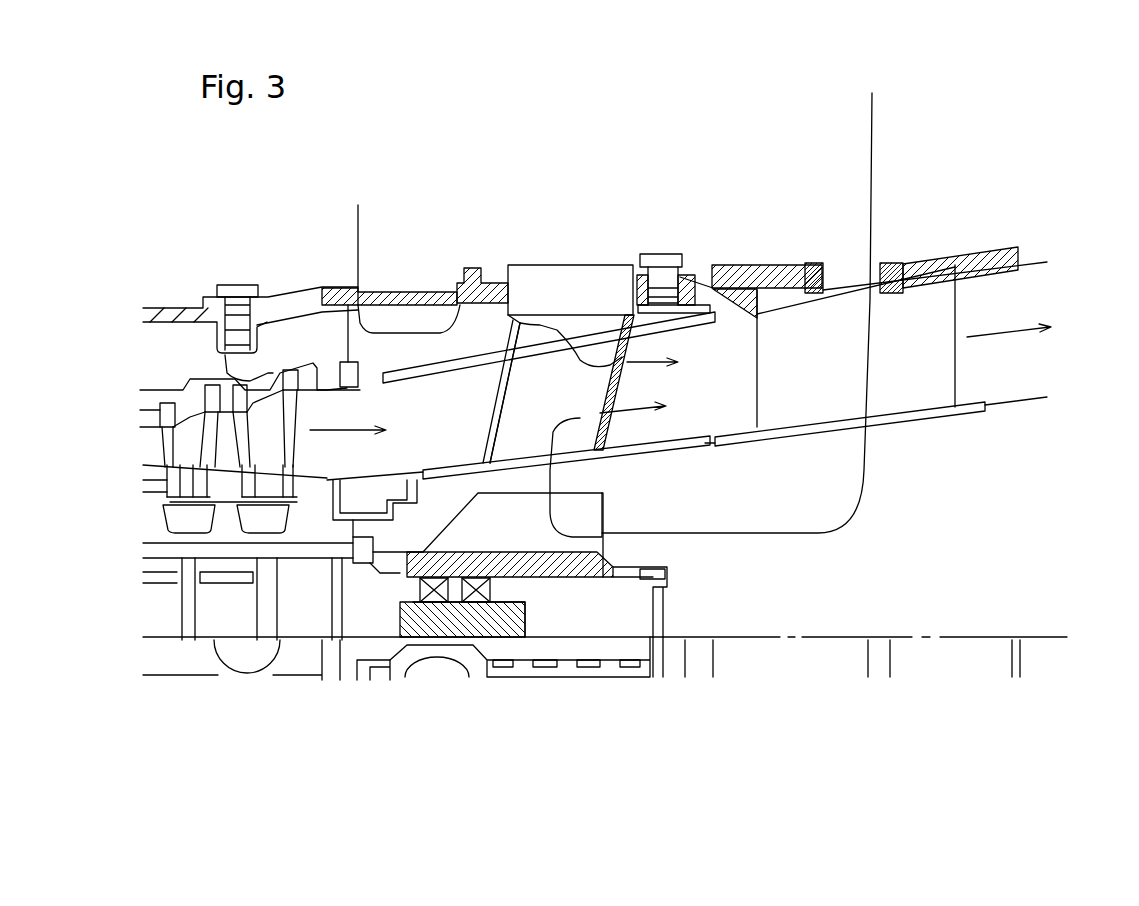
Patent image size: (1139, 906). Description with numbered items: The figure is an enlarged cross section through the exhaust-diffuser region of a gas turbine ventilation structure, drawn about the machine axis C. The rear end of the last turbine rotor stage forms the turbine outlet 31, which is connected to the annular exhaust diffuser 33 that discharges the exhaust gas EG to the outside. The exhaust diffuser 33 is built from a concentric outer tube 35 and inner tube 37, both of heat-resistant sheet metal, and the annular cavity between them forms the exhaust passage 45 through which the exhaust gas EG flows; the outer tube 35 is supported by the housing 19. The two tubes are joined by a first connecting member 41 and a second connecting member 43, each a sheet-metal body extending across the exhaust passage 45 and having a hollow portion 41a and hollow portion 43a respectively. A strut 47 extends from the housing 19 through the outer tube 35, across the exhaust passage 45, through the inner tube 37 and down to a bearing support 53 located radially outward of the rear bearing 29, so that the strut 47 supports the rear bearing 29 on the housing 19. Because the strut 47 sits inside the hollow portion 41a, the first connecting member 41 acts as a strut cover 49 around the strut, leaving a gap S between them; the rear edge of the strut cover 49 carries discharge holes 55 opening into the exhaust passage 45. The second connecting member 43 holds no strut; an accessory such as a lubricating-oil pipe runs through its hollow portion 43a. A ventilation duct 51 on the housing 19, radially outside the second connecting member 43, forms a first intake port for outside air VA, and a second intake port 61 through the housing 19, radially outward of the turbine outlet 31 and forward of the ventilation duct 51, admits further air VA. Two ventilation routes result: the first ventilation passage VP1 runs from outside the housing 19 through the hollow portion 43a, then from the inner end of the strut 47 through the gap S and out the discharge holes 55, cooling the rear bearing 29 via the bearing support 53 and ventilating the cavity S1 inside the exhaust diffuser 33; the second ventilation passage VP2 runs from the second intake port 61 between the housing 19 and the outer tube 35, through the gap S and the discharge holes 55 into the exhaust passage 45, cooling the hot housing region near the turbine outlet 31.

The housing 19 is at (283, 297).
The second intake port 61 is at (367, 287).
The ventilation duct 51 is at (818, 262).
The exhaust diffuser 33 is at (950, 222).
The outer tube 35 is at (920, 280).
The inner tube 37 is at (967, 320).
The first connecting member 41 is at (500, 397).
The strut cover 49 is at (505, 393).
The hollow portion 41a is at (570, 408).
The discharge holes 55 is at (637, 387).
The exhaust passage 45 is at (742, 408).
The second connecting member 43 is at (957, 408).
The hollow portion 43a is at (832, 383).
The strut 47 is at (612, 445).
The turbine outlet 31 is at (337, 432).
The rear bearing 29 is at (490, 590).
The bearing support 53 is at (593, 548).
The exhaust gas EG is at (338, 432).
The air for ventilation VA is at (381, 233).
The first ventilation passage VP1 is at (850, 498).
The second ventilation passage VP2 is at (440, 325).
The gap (cavity) S is at (483, 445).
The cavity inside the exhaust diffuser S1 is at (762, 508).
The central axis C is at (833, 640).